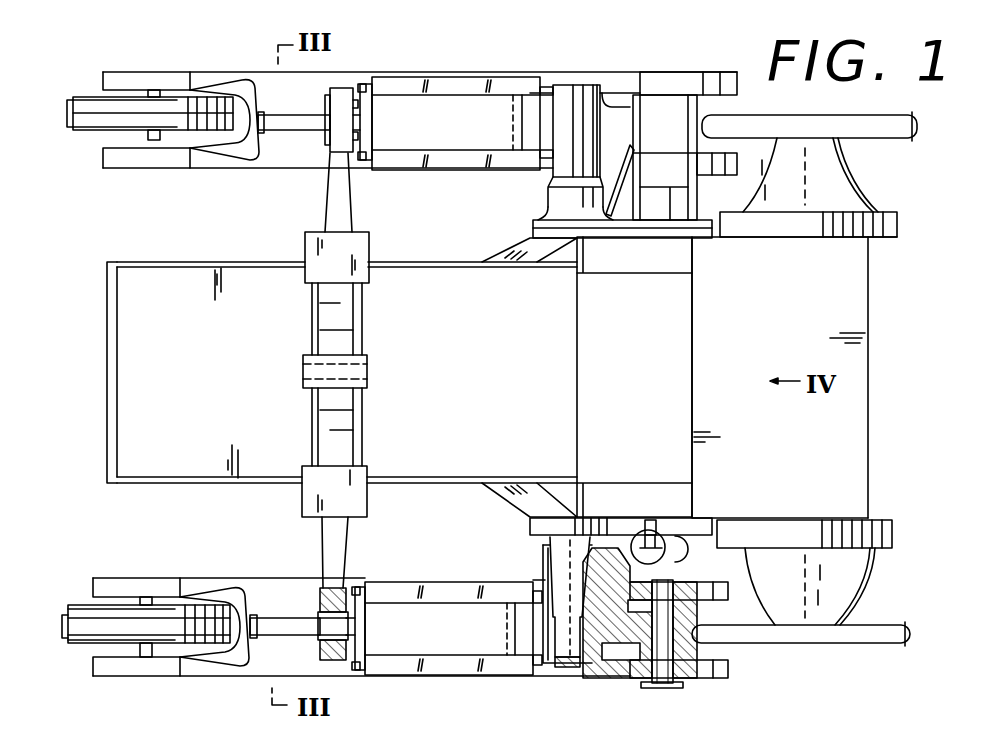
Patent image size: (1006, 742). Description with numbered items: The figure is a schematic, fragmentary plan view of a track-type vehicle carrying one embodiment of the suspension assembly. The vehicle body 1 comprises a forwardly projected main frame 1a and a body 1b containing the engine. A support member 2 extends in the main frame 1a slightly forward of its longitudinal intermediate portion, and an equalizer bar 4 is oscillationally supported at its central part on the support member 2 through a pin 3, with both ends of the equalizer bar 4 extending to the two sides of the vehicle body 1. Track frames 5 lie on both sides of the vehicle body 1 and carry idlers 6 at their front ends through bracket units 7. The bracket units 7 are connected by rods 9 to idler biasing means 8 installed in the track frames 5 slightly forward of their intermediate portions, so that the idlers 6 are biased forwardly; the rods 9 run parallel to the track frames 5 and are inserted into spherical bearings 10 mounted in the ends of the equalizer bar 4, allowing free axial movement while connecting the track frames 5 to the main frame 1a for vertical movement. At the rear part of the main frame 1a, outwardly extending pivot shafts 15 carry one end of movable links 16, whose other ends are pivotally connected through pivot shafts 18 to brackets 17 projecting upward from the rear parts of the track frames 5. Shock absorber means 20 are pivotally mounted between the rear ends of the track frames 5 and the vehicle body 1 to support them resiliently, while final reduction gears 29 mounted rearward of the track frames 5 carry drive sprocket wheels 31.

The track-type vehicle body 1 is at (882, 386).
The main frame 1a is at (433, 490).
The body 1b is at (852, 308).
The support member 2 is at (365, 330).
The pin 3 is at (367, 370).
The equalizer bar 4 is at (345, 190).
The track frame 5 is at (272, 164).
The idler 6 is at (92, 132).
The bracket unit 7 is at (211, 82).
The idler biasing means 8 is at (466, 90).
The rod 9 is at (307, 117).
The spherical bearing 10 is at (338, 95).
The pivot shaft 15 is at (553, 607).
The movable link 16 is at (617, 113).
The bracket 17 is at (678, 73).
The pivot shaft 18 is at (662, 685).
The shock absorber means 20 is at (708, 215).
The final reduction gear 29 is at (838, 587).
The drive sprocket wheel 31 is at (853, 643).